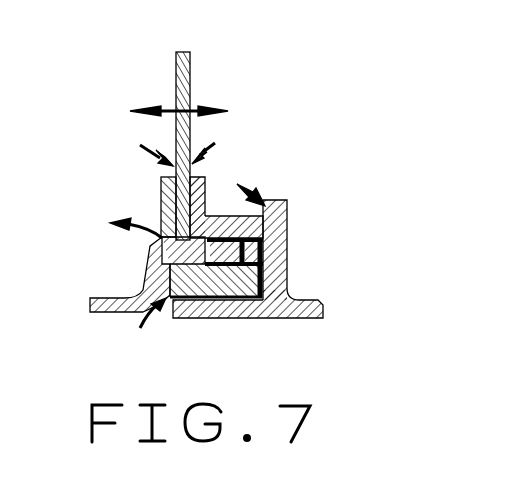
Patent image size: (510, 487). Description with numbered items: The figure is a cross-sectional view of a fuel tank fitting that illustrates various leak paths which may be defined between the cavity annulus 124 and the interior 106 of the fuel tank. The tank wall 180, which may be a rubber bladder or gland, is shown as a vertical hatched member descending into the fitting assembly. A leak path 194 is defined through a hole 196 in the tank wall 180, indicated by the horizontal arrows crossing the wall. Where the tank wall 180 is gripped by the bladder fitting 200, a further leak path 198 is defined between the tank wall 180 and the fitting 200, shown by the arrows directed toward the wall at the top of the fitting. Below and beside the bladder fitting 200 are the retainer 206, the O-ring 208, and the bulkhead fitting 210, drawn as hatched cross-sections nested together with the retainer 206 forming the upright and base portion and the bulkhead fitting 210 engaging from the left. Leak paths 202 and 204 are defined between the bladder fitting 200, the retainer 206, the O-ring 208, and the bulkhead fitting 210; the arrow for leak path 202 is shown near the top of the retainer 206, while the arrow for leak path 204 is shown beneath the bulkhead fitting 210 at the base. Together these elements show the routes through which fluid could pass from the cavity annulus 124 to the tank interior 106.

The interior of the fuel tank 106 is at (325, 127).
The cavity annulus 124 is at (82, 145).
The tank wall 180 is at (184, 52).
The leak path 194 is at (165, 108).
The hole 196 is at (188, 112).
The leak path 198 is at (170, 163).
The bladder fitting 200 is at (207, 218).
The leak path 202 is at (256, 192).
The leak path 204 is at (164, 314).
The retainer 206 is at (288, 275).
The O-ring 208 is at (263, 240).
The bulkhead fitting 210 is at (112, 298).